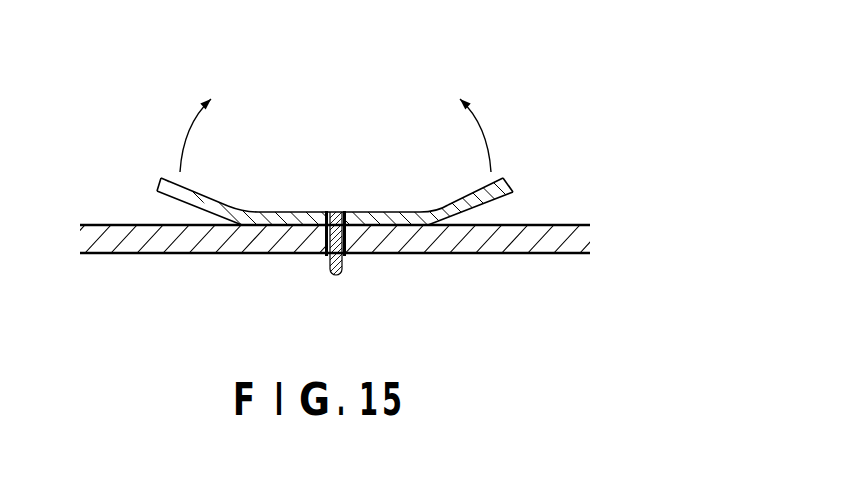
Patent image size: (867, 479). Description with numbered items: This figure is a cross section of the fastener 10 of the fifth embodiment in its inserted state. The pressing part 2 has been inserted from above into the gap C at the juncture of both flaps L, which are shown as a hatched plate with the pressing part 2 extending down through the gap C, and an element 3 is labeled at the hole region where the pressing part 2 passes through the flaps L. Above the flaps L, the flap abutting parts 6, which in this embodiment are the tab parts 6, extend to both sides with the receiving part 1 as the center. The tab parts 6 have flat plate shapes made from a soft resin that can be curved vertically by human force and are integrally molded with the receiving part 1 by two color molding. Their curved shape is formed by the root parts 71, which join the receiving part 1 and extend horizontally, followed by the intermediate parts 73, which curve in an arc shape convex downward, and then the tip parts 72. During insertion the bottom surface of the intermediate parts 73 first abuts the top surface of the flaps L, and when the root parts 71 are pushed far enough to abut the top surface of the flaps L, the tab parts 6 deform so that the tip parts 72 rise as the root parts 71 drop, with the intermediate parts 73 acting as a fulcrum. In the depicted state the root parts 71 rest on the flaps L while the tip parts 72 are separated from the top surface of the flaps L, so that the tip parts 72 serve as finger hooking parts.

The receiving part 1 is at (336, 212).
The pressing part 2 is at (343, 275).
The hole 3 is at (324, 228).
The flap abutting part 6 is at (292, 162).
The fastener 10 is at (292, 162).
The root part 71 is at (317, 213).
The tip part 72 is at (167, 176).
The intermediate part 73 is at (240, 222).
The gap C is at (323, 265).
The flap L is at (118, 240).